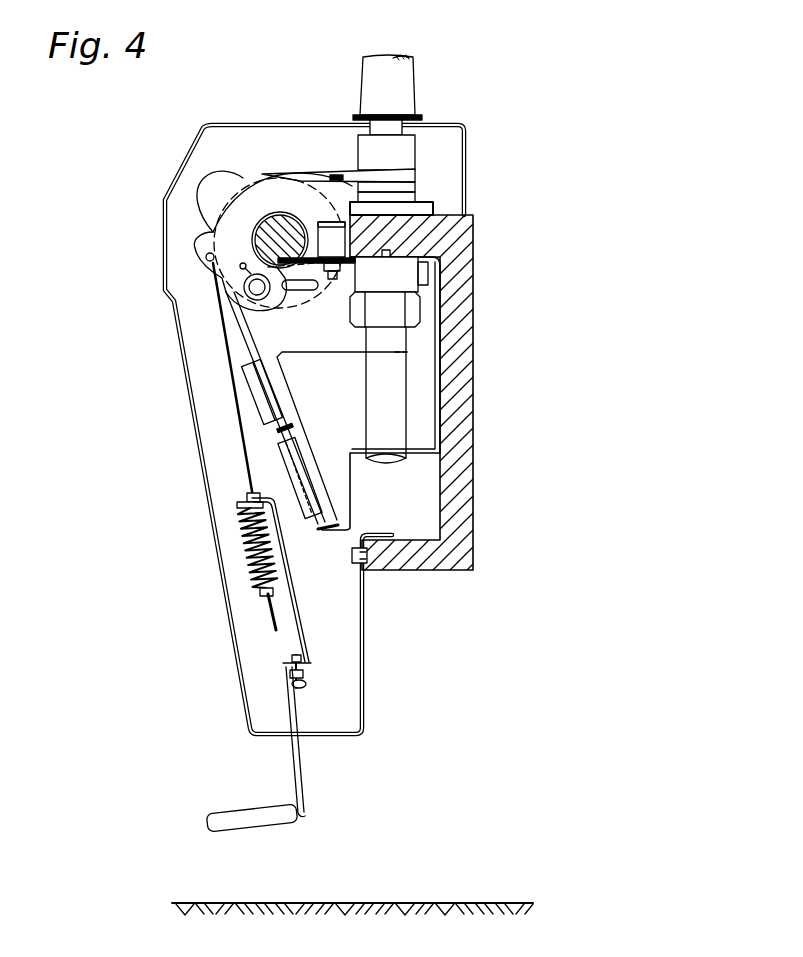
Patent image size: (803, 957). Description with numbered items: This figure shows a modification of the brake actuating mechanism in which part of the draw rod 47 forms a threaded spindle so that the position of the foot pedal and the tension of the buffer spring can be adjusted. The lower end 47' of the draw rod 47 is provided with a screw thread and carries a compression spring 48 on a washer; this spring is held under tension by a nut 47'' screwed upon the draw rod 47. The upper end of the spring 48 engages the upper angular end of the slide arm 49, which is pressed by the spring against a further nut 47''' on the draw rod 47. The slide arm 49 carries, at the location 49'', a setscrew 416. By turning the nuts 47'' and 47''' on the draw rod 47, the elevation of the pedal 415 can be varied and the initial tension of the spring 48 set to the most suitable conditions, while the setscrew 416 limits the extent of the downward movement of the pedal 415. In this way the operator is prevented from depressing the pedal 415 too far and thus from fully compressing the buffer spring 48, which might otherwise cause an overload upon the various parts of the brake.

The draw rod 47 is at (179, 380).
The lower end of the draw rod 47' is at (190, 607).
The nut 47'' is at (306, 601).
The nut 47''' is at (184, 503).
The compression spring 48 is at (253, 542).
The slide arm 49 is at (281, 580).
The setscrew location on slide arm 49'' is at (376, 671).
The setscrew 416 is at (306, 686).
The pedal 415 is at (217, 822).